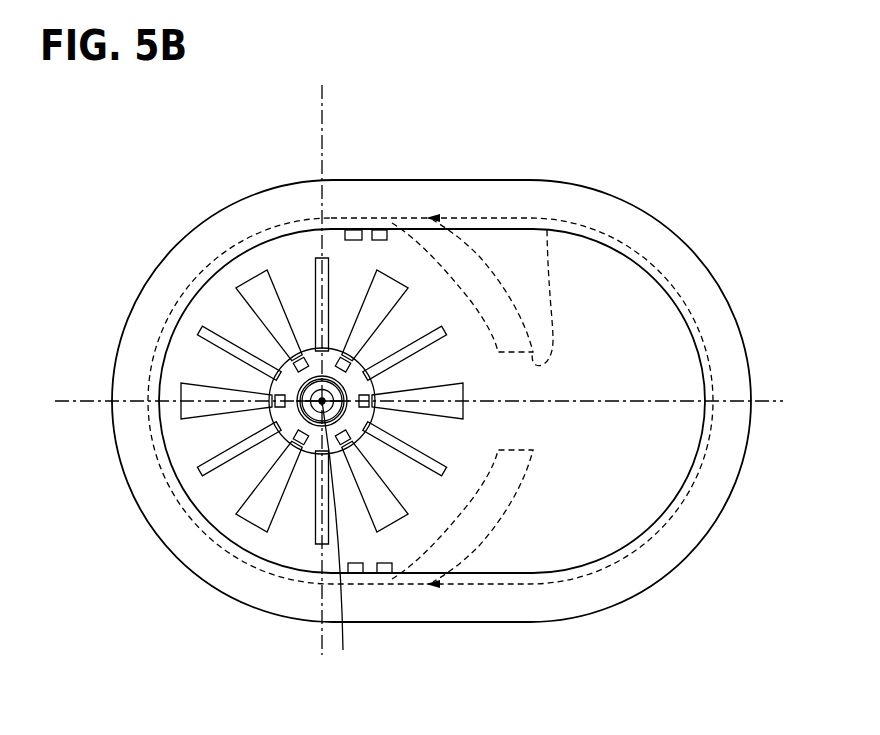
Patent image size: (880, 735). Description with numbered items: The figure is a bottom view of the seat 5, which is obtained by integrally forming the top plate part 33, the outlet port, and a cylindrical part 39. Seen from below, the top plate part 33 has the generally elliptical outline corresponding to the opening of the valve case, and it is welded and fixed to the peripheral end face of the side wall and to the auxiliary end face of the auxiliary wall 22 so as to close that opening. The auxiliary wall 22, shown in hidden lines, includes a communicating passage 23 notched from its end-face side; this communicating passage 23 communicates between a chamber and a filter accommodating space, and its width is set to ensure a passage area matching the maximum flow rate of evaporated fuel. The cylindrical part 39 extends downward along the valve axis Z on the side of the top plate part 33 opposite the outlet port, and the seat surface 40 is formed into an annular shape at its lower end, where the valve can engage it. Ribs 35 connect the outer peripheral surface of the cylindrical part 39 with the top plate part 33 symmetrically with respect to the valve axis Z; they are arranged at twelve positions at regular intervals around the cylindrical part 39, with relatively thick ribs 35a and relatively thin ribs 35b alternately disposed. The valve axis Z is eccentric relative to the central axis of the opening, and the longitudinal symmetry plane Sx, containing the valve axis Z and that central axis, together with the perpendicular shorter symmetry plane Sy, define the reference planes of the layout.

The seat 5 is at (186, 148).
The auxiliary wall 22 is at (473, 268).
The communicating passage 23 is at (547, 230).
The top plate part 33 is at (595, 263).
The ribs 35 is at (314, 266).
The relatively thick ribs 35a is at (257, 290).
The relatively thin ribs 35b is at (200, 333).
The cylindrical part 39 is at (378, 365).
The seat surface 40 is at (326, 372).
The longitudinal symmetry plane Sx is at (779, 404).
The shorter symmetry plane Sy is at (324, 90).
The valve axis Z is at (336, 539).